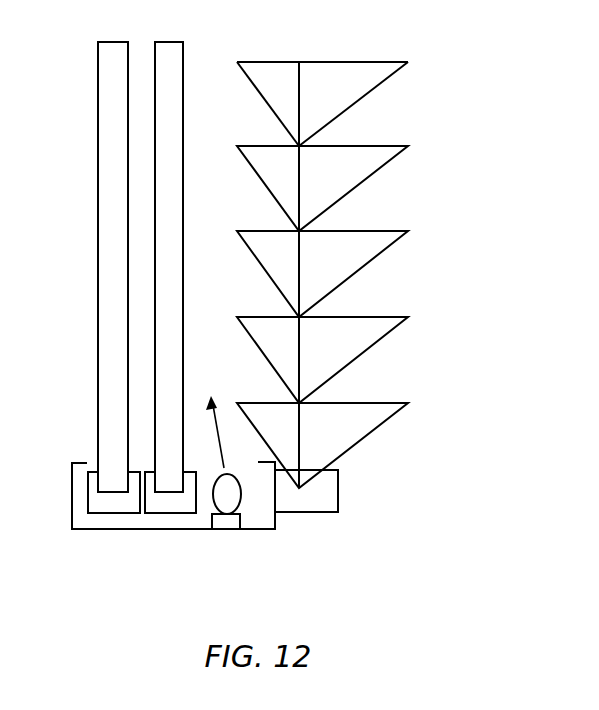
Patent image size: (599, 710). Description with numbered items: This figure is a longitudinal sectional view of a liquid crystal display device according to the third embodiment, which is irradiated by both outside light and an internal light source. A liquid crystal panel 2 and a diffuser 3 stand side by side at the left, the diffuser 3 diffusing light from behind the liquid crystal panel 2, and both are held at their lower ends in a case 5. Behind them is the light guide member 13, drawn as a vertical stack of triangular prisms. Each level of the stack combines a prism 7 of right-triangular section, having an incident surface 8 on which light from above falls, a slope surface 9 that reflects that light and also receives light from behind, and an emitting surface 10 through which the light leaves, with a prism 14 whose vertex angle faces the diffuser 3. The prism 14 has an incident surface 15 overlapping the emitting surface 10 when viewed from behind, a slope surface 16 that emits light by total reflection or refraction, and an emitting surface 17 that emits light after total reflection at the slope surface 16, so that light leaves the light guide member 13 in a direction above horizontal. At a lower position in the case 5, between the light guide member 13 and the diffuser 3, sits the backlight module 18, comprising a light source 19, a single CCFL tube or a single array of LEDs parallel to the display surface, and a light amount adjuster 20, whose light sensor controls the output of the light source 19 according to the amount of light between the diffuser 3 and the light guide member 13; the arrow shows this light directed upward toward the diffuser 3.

The liquid crystal panel 2 is at (113, 46).
The diffuser 3 is at (171, 46).
The case 5 is at (72, 488).
The prism 7 is at (353, 84).
The incident surface 8 is at (380, 61).
The slope surface 9 is at (372, 90).
The emitting surface 10 is at (300, 103).
The light guide member 13 is at (371, 254).
The prism 14 is at (260, 85).
The incident surface 15 is at (299, 91).
The slope surface 16 is at (248, 76).
The emitting surface 17 is at (255, 62).
The backlight module 18 is at (257, 544).
The light source 19 is at (238, 503).
The light amount adjuster 20 is at (229, 543).